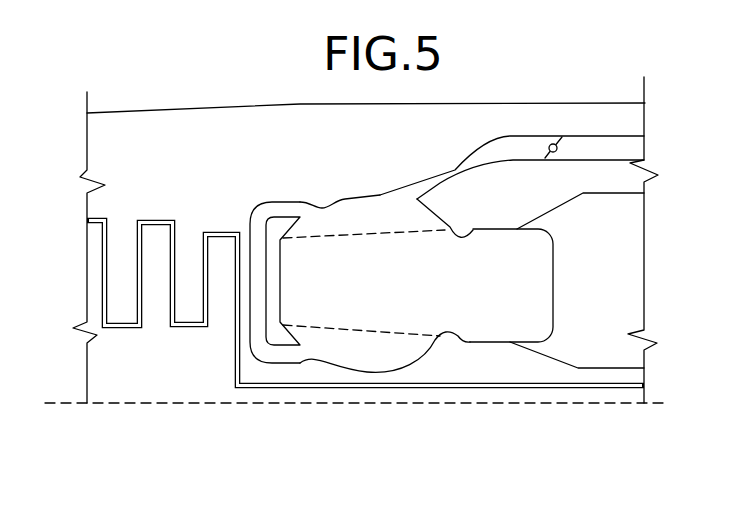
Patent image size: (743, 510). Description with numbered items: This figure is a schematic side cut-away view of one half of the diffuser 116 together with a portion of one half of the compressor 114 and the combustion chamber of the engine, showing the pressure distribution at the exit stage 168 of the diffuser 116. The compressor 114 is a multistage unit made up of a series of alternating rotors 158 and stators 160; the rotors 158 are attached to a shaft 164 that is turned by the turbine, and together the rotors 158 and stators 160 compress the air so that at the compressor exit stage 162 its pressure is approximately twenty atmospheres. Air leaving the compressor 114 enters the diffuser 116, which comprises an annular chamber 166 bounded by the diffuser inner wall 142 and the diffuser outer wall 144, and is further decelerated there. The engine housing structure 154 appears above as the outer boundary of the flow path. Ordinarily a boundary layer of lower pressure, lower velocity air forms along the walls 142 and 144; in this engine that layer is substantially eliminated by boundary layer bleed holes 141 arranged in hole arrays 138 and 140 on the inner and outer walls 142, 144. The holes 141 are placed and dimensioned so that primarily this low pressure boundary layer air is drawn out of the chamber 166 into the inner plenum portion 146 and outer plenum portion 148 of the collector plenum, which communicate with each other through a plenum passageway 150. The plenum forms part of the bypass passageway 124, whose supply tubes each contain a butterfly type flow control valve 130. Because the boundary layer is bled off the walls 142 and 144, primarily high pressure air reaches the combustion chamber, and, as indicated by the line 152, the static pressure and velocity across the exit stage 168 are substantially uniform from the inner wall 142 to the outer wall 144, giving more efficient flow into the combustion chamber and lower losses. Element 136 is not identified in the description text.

The compressor 114 is at (152, 198).
The diffuser 116 is at (381, 247).
The bypass passageway 124 is at (600, 125).
The flow control valve 130 is at (544, 132).
The side wall 136 is at (73, 403).
The hole array 138 is at (445, 254).
The hole array 140 is at (445, 305).
The boundary layer bleed holes 141 is at (408, 236).
The diffuser inner wall 142 is at (457, 333).
The diffuser outer wall 144 is at (473, 230).
The inner plenum portion 146 is at (412, 353).
The outer plenum portion 148 is at (432, 217).
The plenum passageway 150 is at (263, 220).
The pressure distribution line 152 is at (555, 268).
The engine housing structure 154 is at (248, 122).
The rotors 158 is at (222, 257).
The stators 160 is at (245, 307).
The compressor exit stage 162 is at (293, 302).
The shaft 164 is at (633, 393).
The annular chamber 166 is at (580, 201).
The diffuser exit stage 168 is at (542, 321).